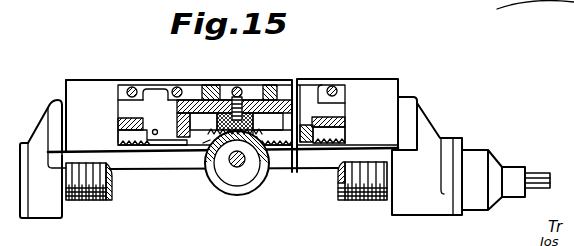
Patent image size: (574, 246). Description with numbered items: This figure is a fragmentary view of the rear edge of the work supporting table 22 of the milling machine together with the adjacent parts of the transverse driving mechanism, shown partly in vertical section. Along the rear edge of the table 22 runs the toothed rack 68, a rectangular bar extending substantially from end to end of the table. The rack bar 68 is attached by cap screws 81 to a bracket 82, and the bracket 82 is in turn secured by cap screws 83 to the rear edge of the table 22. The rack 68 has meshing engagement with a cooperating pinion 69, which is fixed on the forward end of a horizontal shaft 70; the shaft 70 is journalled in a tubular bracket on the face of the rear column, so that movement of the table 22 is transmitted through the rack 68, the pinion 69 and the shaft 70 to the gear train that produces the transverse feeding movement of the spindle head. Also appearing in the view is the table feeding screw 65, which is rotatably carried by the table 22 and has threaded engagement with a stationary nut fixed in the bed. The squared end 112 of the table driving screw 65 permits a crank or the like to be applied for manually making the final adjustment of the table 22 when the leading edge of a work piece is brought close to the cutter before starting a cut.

The work supporting table 22 is at (97, 79).
The cap screws 83 is at (172, 87).
The bracket 82 is at (219, 96).
The cap screws 81 is at (249, 102).
The toothed rack 68 is at (203, 143).
The horizontal shaft 70 is at (229, 163).
The pinion 69 is at (223, 185).
The table feeding screw 65 is at (108, 183).
The squared end 112 is at (543, 173).